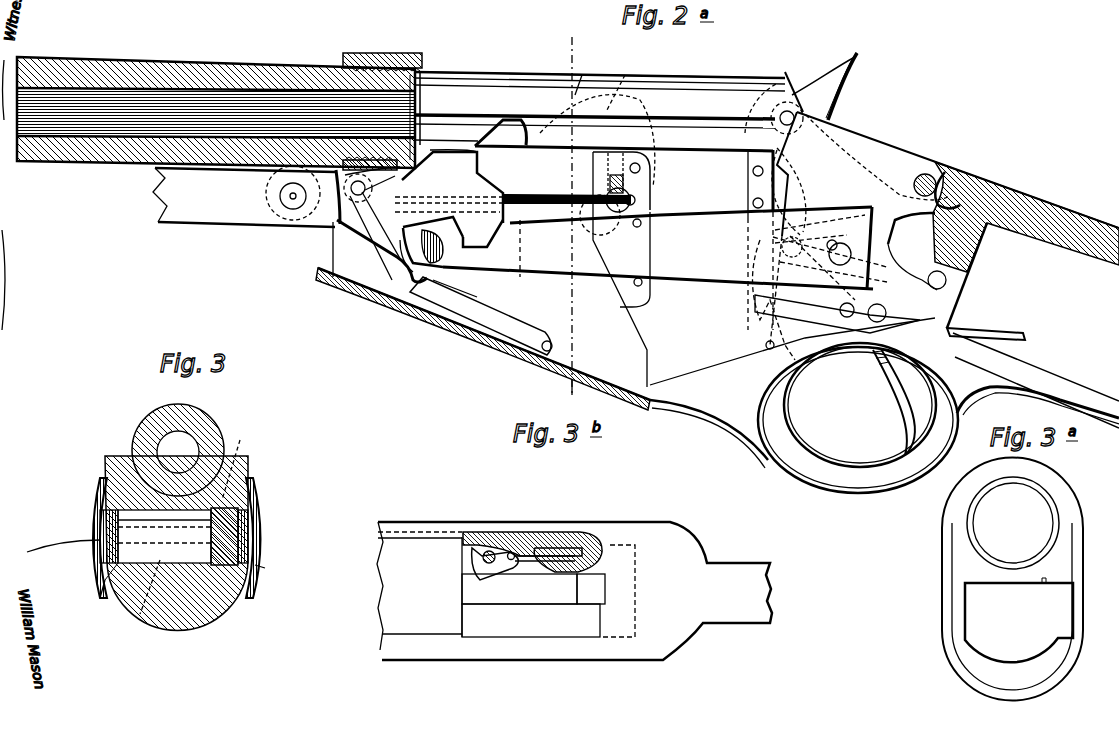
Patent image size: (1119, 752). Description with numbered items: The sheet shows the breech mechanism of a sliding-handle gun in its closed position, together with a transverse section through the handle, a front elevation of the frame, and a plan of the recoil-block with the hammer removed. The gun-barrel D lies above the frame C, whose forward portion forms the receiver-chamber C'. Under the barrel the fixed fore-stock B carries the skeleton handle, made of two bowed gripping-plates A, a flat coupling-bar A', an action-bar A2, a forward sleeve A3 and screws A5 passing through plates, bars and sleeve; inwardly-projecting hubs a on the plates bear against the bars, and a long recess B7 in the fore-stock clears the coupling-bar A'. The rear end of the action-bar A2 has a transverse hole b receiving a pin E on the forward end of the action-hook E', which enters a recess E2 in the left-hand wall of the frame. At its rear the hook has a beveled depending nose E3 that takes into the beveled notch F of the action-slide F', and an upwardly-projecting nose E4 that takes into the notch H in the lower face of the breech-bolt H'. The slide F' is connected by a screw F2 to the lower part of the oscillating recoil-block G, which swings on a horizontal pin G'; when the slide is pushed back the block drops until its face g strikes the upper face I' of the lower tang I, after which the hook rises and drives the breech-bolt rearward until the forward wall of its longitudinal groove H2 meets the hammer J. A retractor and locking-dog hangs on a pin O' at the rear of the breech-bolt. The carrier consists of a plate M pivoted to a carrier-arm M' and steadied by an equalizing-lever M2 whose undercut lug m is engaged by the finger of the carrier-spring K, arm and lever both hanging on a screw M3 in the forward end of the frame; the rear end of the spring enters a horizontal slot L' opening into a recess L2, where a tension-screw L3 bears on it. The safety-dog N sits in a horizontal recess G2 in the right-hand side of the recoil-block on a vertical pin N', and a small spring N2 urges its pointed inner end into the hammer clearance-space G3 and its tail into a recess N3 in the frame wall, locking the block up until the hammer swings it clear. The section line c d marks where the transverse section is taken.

In FIG. 2a, the gun-barrel D is at (174, 57).
In FIG. 3, the gun-barrel D is at (147, 420).
In FIG. 2a, the notch H is at (609, 111).
In FIG. 3b, the notch H is at (429, 587).
In FIG. 2a, the breech-bolt H' is at (582, 74).
In FIG. 2a, the longitudinal groove H2 is at (620, 80).
In FIG. 2a, the section line c is at (567, 207).
In FIG. 2a, the section line d is at (577, 391).
In FIG. 2a, the horizontal pin O' is at (774, 93).
In FIG. 2a, the hammer J is at (824, 86).
In FIG. 2a, the recoil-block G is at (945, 201).
In FIG. 3b, the recoil-block G is at (548, 591).
In FIG. 2a, the horizontal pin G' is at (934, 164).
In FIG. 2a, the face of recoil-block g is at (765, 180).
In FIG. 2a, the lower tang I is at (689, 269).
In FIG. 2a, the upper face of lower tang I' is at (915, 228).
In FIG. 2a, the screw F2 is at (837, 284).
In FIG. 2a, the frame C is at (637, 380).
In FIG. 3b, the frame C is at (574, 580).
In FIG. 3a, the frame C is at (1000, 578).
In FIG. 2a, the action-bar A2 is at (244, 197).
In FIG. 3, the action-bar A2 is at (260, 512).
In FIG. 2a, the pin E is at (293, 210).
In FIG. 2a, the transverse hole b is at (288, 205).
In FIG. 2a, the screw M3 is at (333, 230).
In FIG. 2a, the equalizing-lever M2 is at (395, 245).
In FIG. 2a, the action-hook E' is at (424, 202).
In FIG. 2a, the undercut lug m is at (384, 174).
In FIG. 2a, the upwardly-projecting beveled nose E4 is at (452, 185).
In FIG. 2a, the receiver-chamber C' is at (474, 156).
In FIG. 2a, the carrier-spring K is at (566, 188).
In FIG. 2a, the beveled depending nose E3 is at (483, 229).
In FIG. 2a, the beveled notch F is at (457, 250).
In FIG. 2a, the action-slide F' is at (547, 248).
In FIG. 2a, the horizontal slot L' is at (597, 165).
In FIG. 2a, the tension-screw L3 is at (625, 192).
In FIG. 2a, the recess L2 is at (631, 202).
In FIG. 2a, the carrier plate M is at (481, 316).
In FIG. 2a, the carrier-arm M' is at (458, 286).
In FIG. 3, the fore-stock B is at (202, 610).
In FIG. 3, the coupling-bar A' is at (129, 545).
In FIG. 3, the screws A5 is at (100, 535).
In FIG. 3, the gripping-plates A is at (175, 537).
In FIG. 3, the inwardly-projecting hubs a is at (145, 557).
In FIG. 3, the long recess B7 is at (88, 592).
In FIG. 3, the forward sleeve A3 is at (144, 599).
In FIG. 3b, the vertical clearance-space G3 is at (533, 589).
In FIG. 3b, the horizontal recess G2 is at (560, 540).
In FIG. 3b, the recess N3 is at (478, 548).
In FIG. 3b, the pivot pin N' is at (476, 526).
In FIG. 3b, the safety-dog N is at (523, 526).
In FIG. 3b, the small spring N2 is at (550, 552).
In FIG. 3a, the recess E2 is at (1060, 612).